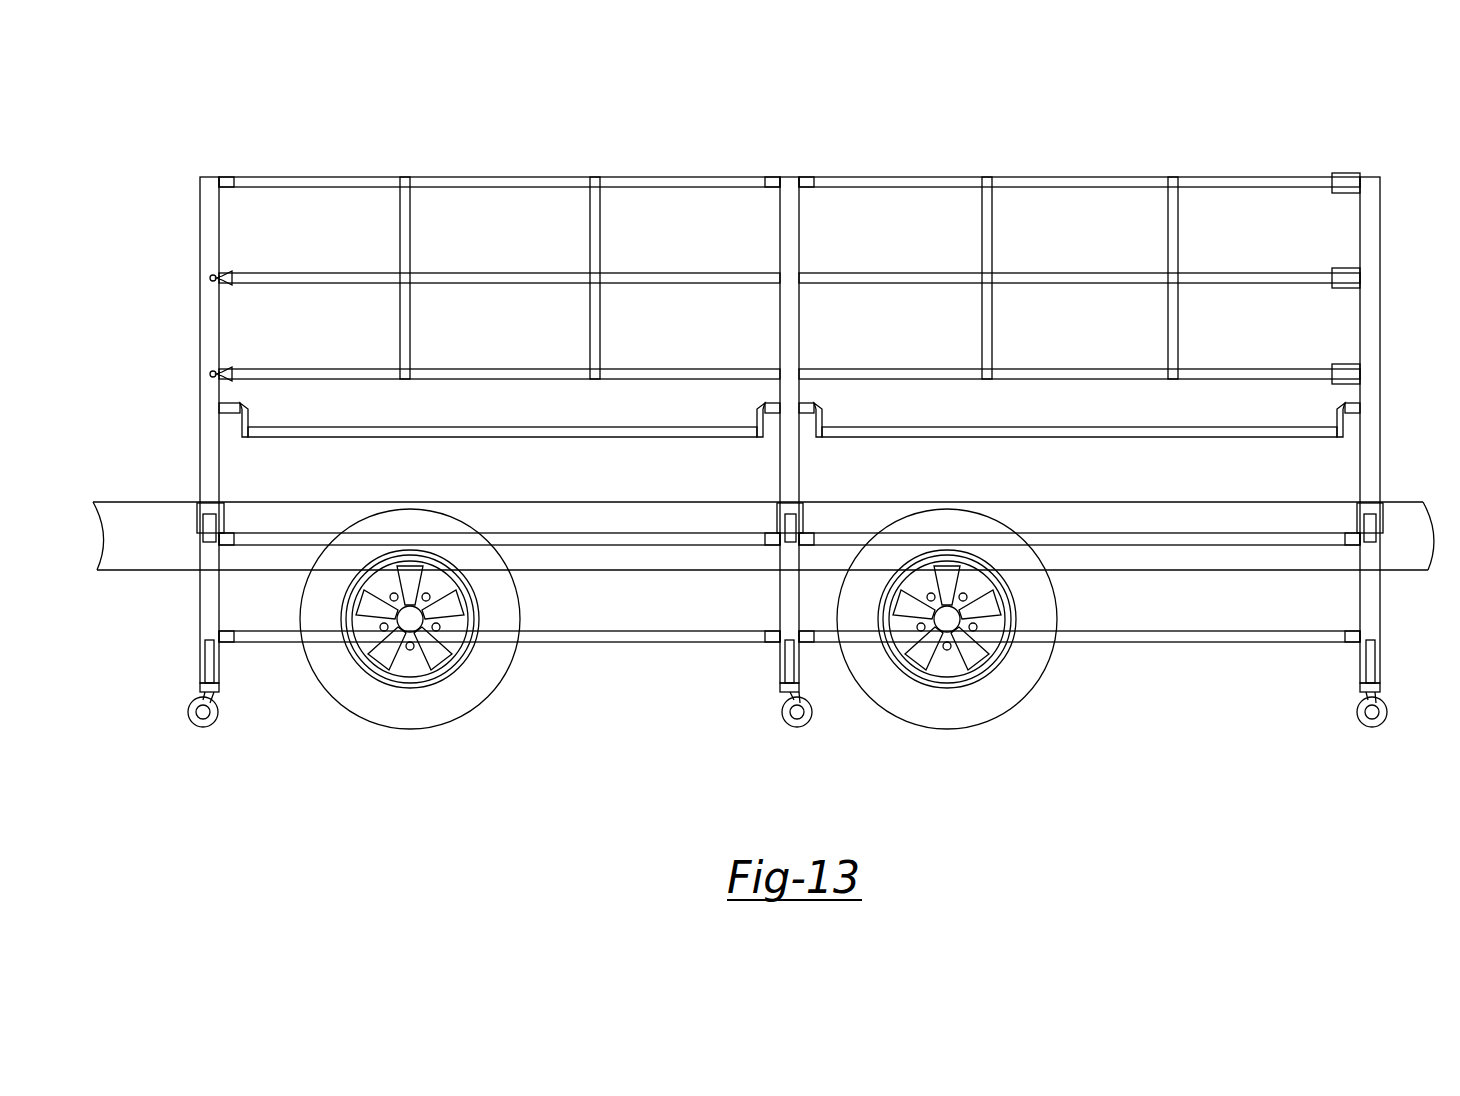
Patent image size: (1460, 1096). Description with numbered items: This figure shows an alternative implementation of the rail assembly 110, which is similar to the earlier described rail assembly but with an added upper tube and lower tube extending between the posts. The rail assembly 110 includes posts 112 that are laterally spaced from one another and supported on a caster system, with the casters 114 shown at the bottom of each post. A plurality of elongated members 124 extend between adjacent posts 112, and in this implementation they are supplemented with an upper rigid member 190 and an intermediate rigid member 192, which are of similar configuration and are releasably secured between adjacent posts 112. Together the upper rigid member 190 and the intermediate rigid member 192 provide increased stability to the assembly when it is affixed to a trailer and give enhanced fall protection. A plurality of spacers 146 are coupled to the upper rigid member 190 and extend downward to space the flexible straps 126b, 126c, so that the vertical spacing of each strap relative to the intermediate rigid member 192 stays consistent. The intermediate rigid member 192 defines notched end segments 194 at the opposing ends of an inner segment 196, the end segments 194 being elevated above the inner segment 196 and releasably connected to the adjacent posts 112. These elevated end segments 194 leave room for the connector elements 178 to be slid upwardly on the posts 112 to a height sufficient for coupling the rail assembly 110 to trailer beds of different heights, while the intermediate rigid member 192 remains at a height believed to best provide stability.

The rail assembly 110 is at (213, 92).
The post 112 is at (200, 226).
The caster jack foot 114 is at (203, 735).
The elongated member 124 is at (515, 150).
The strap 126b is at (502, 270).
The strap 126c is at (336, 369).
The spacer 146 is at (400, 222).
The connector element 178 is at (197, 518).
The upper rigid member 190 is at (295, 176).
The intermediate rigid member 192 is at (372, 400).
The notched end segment 194 is at (242, 426).
The inner segment 196 is at (440, 426).